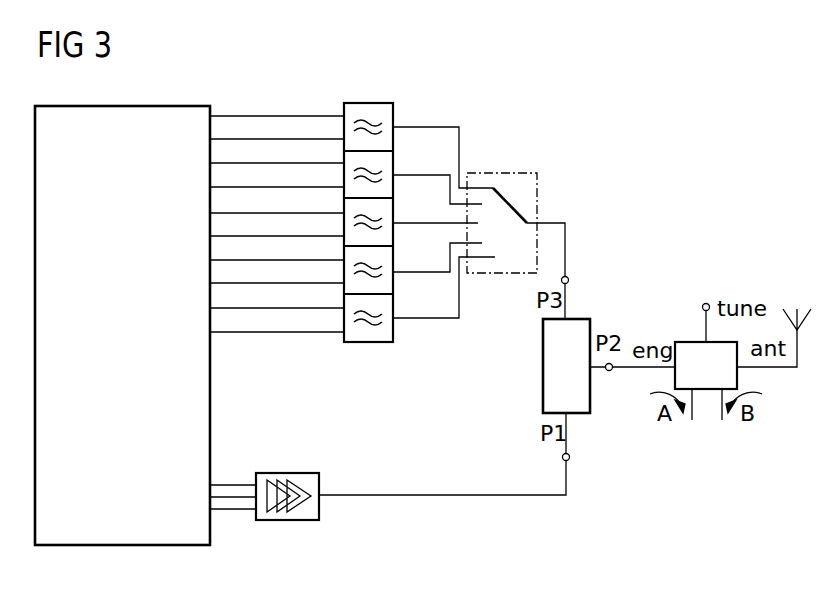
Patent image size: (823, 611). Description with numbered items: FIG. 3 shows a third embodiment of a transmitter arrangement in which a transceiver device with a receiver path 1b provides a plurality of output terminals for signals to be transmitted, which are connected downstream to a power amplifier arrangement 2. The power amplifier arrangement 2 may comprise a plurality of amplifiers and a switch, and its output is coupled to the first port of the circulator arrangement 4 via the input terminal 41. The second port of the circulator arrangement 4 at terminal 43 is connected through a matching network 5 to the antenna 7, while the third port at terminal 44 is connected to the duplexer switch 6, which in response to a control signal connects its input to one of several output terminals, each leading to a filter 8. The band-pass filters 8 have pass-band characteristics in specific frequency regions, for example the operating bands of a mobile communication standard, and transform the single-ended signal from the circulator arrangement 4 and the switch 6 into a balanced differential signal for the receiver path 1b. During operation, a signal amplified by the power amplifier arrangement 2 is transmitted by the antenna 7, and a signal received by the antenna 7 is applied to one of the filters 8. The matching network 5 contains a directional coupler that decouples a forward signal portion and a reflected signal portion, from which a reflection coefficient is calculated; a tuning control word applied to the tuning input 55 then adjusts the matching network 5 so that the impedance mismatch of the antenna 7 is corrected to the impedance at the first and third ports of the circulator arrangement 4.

The receiver path 1b is at (162, 106).
The filter 8 is at (328, 103).
The duplexer switch 6 is at (514, 173).
The terminal 44 is at (568, 278).
The circulator arrangement 4 is at (543, 370).
The terminal 43 is at (610, 371).
The input terminal 41 is at (569, 459).
The power amplifier arrangement 2 is at (320, 506).
The matching network 5 is at (714, 378).
The tuning input 55 is at (706, 303).
The antenna 7 is at (803, 310).